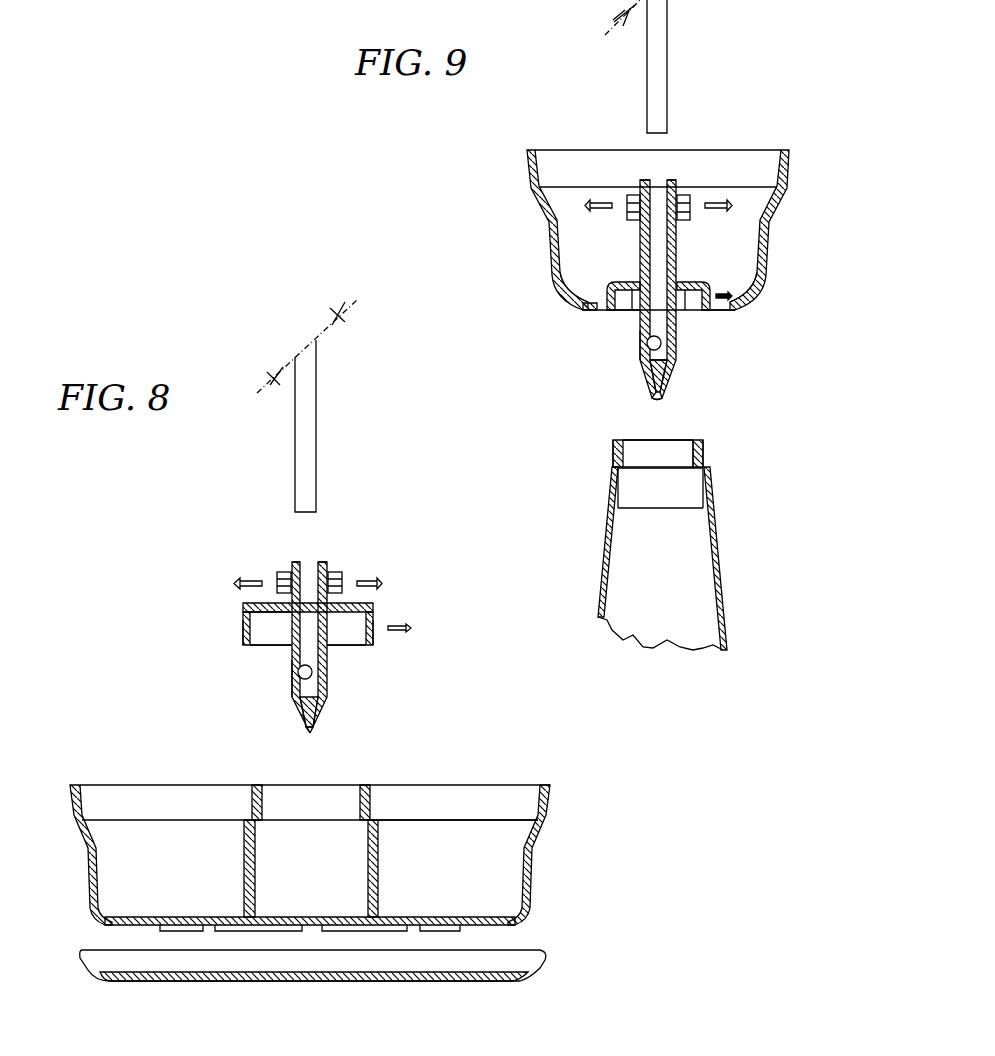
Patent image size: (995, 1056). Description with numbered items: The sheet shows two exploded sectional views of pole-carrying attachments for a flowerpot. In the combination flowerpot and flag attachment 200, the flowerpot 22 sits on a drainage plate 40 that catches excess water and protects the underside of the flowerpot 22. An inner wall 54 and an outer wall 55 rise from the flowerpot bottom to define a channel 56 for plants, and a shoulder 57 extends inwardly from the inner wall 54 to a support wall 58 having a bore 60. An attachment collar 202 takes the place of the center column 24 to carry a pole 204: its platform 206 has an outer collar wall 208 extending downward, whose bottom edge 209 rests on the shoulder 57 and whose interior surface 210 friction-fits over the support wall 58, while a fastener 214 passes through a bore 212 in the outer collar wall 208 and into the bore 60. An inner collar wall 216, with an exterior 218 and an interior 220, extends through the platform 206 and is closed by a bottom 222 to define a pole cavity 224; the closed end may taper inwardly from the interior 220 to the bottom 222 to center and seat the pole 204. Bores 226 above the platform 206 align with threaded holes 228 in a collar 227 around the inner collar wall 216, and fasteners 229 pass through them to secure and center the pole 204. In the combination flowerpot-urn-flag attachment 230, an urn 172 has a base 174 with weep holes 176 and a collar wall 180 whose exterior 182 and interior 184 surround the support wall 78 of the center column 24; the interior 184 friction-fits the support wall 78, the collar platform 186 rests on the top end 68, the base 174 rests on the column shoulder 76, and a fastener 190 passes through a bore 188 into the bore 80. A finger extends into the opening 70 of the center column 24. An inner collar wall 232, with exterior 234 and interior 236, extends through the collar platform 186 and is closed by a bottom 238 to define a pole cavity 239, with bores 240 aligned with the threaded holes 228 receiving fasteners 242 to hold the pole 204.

In FIG. 8, the flowerpot 22 is at (567, 870).
In FIG. 9, the center column 24 is at (748, 572).
In FIG. 8, the drainage plate 40 is at (489, 984).
In FIG. 8, the inner wall 54 is at (256, 860).
In FIG. 8, the outer wall 55 is at (553, 799).
In FIG. 8, the channel 56 is at (483, 806).
In FIG. 8, the shoulder 57 is at (378, 806).
In FIG. 8, the support wall 58 is at (264, 798).
In FIG. 8, the bore 60 is at (371, 808).
In FIG. 9, the top end 68 is at (622, 444).
In FIG. 9, the opening 70 is at (680, 462).
In FIG. 9, the column shoulder 76 is at (612, 466).
In FIG. 9, the support wall 78 is at (614, 462).
In FIG. 9, the bore 80 is at (705, 450).
In FIG. 9, the urn 172 is at (797, 162).
In FIG. 9, the base 174 is at (738, 311).
In FIG. 9, the weep holes 176 is at (585, 311).
In FIG. 9, the collar wall 180 is at (600, 293).
In FIG. 9, the exterior 182 is at (713, 287).
In FIG. 9, the interior 184 is at (627, 311).
In FIG. 9, the collar platform 186 is at (627, 281).
In FIG. 9, the bore 188 is at (714, 294).
In FIG. 9, the fastener 190 is at (716, 302).
In FIG. 8, the combination flowerpot and flag attachment 200 is at (115, 500).
In FIG. 8, the attachment collar 202 is at (378, 600).
In FIG. 9, the pole 204 is at (668, 30).
In FIG. 8, the pole 204 is at (318, 410).
In FIG. 8, the platform 206 is at (262, 601).
In FIG. 8, the outer collar wall 208 is at (250, 632).
In FIG. 8, the bottom edge 209 is at (343, 646).
In FIG. 8, the interior surface 210 is at (265, 635).
In FIG. 8, the bore 212 is at (380, 625).
In FIG. 8, the fastener 214 is at (412, 630).
In FIG. 8, the inner collar wall 216 is at (290, 677).
In FIG. 8, the exterior 218 is at (326, 680).
In FIG. 8, the interior 220 is at (292, 678).
In FIG. 8, the bottom 222 is at (309, 735).
In FIG. 8, the pole cavity 224 is at (303, 561).
In FIG. 8, the bores 226 is at (322, 560).
In FIG. 9, the collar 227 is at (628, 205).
In FIG. 8, the collar 227 is at (280, 576).
In FIG. 9, the threaded holes 228 is at (690, 205).
In FIG. 8, the threaded holes 228 is at (342, 580).
In FIG. 8, the fasteners 229 is at (236, 581).
In FIG. 9, the combination flowerpot-urn-flag attachment 230 is at (378, 185).
In FIG. 9, the inner collar wall 232 is at (637, 347).
In FIG. 9, the exterior 234 is at (677, 345).
In FIG. 9, the interior 236 is at (655, 355).
In FIG. 9, the bottom 238 is at (663, 406).
In FIG. 9, the pole cavity 239 is at (650, 181).
In FIG. 9, the bores 240 is at (671, 181).
In FIG. 9, the fasteners 242 is at (733, 205).